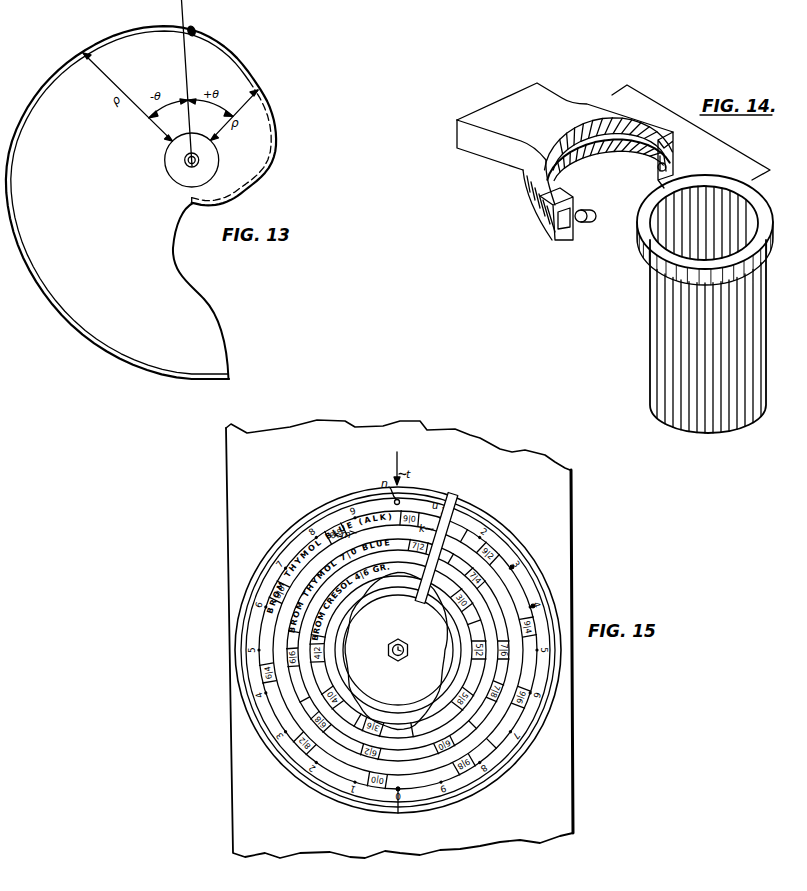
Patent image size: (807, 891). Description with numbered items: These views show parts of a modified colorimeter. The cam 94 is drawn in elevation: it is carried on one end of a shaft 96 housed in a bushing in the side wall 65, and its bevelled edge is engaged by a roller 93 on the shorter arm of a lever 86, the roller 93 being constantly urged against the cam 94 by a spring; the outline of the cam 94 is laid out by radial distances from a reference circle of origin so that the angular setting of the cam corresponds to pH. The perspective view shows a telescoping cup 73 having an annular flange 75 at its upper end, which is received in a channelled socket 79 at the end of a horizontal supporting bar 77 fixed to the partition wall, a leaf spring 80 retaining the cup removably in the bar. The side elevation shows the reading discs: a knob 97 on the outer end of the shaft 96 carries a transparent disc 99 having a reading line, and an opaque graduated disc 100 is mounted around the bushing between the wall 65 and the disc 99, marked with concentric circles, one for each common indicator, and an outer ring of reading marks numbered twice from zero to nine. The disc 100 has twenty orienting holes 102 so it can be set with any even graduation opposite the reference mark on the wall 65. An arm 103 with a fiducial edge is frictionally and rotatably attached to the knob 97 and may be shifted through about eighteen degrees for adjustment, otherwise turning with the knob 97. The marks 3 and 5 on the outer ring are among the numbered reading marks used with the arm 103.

In FIG. 13, the lever 86 is at (186, 24).
In FIG. 13, the roller 93 is at (194, 29).
In FIG. 13, the cam 94 is at (175, 263).
In FIG. 13, the shaft 96 is at (199, 157).
In FIG. 15, the shaft 96 is at (400, 662).
In FIG. 14, the horizontal supporting bar 77 is at (562, 95).
In FIG. 14, the channelled socket 79 is at (675, 153).
In FIG. 14, the leaf spring 80 is at (589, 208).
In FIG. 14, the annular flange 75 is at (641, 256).
In FIG. 14, the telescoping cup 73 is at (651, 340).
In FIG. 15, the side wall 65 is at (480, 437).
In FIG. 15, the knob 97 is at (422, 628).
In FIG. 15, the transparent disc 99 is at (490, 528).
In FIG. 15, the graduated disc 100 is at (519, 540).
In FIG. 15, the orienting hole 102 is at (398, 787).
In FIG. 15, the arm 103 is at (449, 496).
In FIG. 15, the indicator point 3 is at (514, 567).
In FIG. 15, the indicator point 5 is at (535, 606).